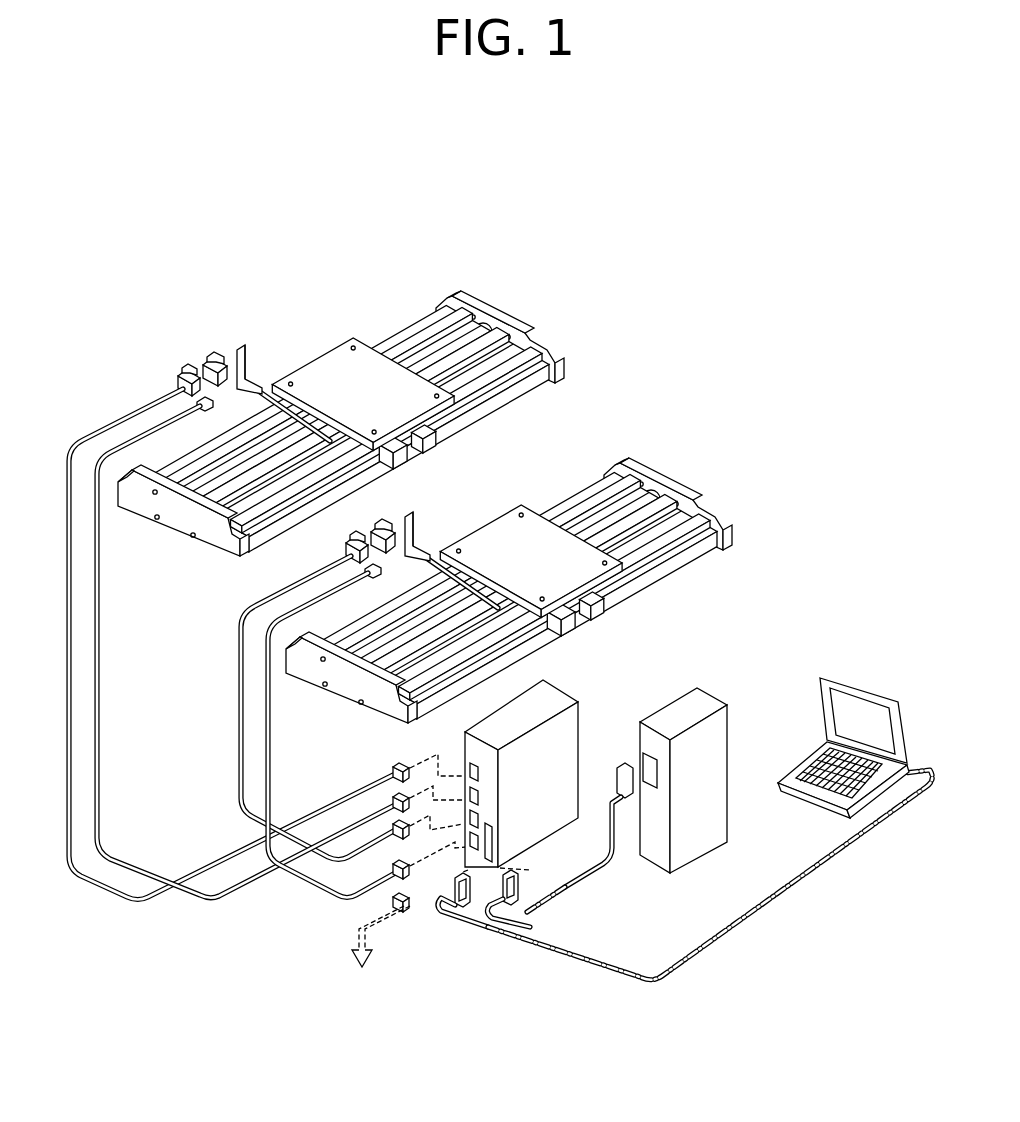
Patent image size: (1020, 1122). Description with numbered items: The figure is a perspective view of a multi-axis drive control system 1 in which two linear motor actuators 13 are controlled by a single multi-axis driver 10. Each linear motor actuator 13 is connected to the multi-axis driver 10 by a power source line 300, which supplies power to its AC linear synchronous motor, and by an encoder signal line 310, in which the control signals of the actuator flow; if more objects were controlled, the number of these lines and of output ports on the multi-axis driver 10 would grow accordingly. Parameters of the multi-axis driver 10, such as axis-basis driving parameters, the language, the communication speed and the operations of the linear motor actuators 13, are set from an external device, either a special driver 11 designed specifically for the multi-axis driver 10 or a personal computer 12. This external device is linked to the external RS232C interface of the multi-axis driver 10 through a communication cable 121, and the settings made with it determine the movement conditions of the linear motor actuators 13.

The multi-axis drive control system 1 is at (670, 171).
The linear motor actuator 13 is at (683, 418).
The multi-axis driver 10 is at (561, 690).
The external device (special driver) 11 is at (711, 689).
The personal computer 12 is at (867, 686).
The communication cable 121 is at (465, 925).
The power source line 300 is at (100, 731).
The encoder signal line 310 is at (96, 886).